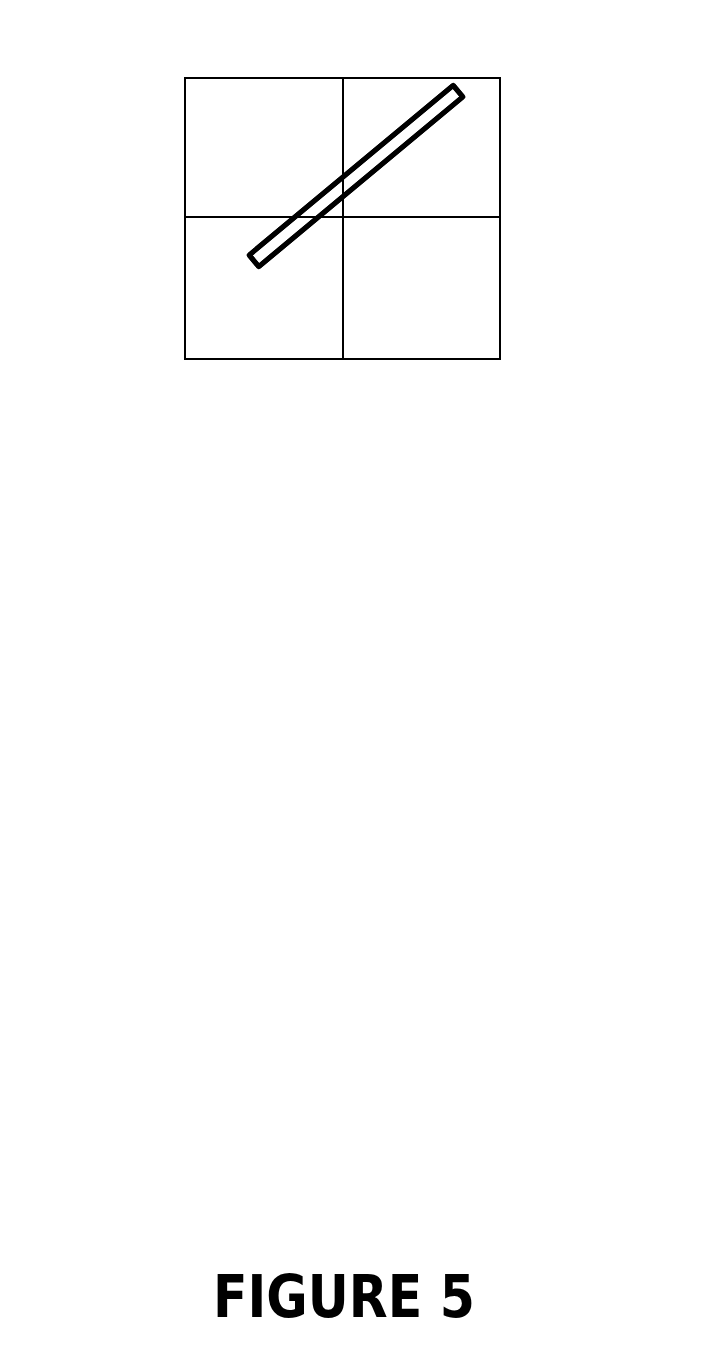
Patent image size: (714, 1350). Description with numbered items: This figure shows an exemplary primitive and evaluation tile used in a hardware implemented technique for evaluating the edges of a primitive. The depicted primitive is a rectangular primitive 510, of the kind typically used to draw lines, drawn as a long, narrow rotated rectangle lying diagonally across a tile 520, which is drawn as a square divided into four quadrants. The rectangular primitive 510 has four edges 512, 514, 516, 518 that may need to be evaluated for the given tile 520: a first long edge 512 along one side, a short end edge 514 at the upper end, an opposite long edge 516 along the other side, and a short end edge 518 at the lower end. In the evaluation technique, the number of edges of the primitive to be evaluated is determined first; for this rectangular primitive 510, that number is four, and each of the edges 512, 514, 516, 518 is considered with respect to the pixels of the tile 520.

The rectangular primitive 510 is at (267, 175).
The edge 512 is at (338, 134).
The edge 514 is at (534, 67).
The edge 516 is at (439, 182).
The edge 518 is at (145, 296).
The tile 520 is at (373, 244).